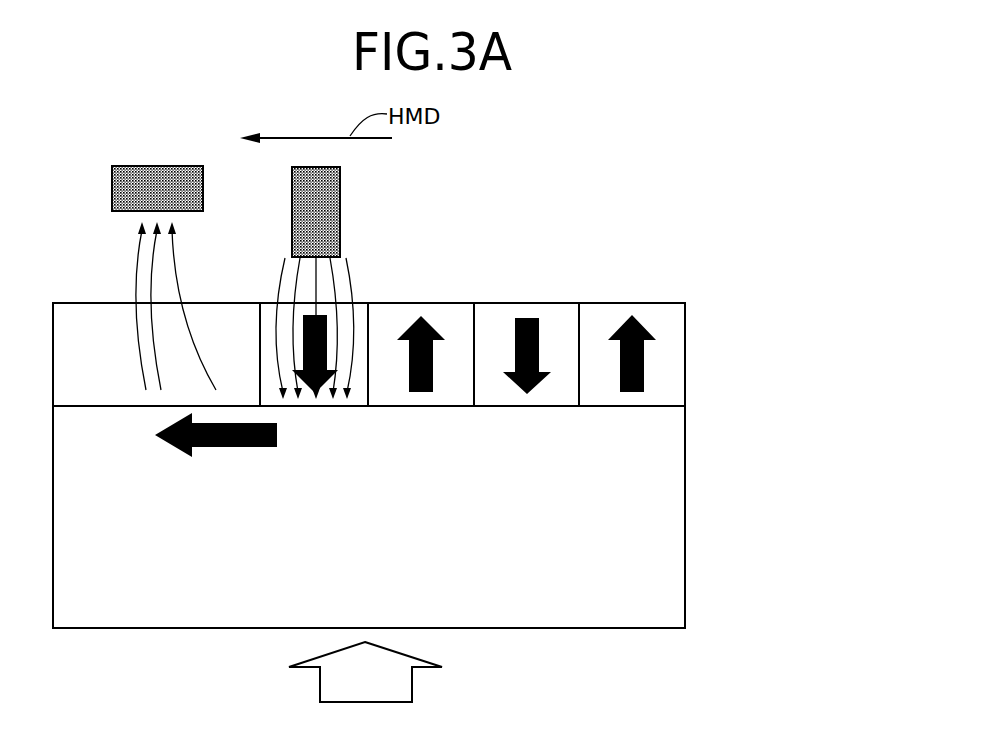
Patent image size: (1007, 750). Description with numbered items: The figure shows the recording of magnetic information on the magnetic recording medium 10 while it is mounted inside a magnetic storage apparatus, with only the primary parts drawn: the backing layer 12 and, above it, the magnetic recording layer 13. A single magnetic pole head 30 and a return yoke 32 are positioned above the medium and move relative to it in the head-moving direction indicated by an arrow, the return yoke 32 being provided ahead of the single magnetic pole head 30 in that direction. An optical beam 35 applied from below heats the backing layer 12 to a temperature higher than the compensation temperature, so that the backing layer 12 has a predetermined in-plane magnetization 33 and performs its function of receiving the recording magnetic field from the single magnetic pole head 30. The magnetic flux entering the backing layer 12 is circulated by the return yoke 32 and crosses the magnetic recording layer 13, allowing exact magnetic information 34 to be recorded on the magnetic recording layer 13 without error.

The magnetic recording medium 10 is at (770, 424).
The backing layer 12 is at (409, 517).
The magnetic recording layer 13 is at (409, 296).
The single magnetic pole head 30 is at (340, 206).
The return yoke 32 is at (112, 192).
The magnetization 33 is at (277, 433).
The magnetic information 34 is at (659, 303).
The optical beam 35 is at (403, 683).